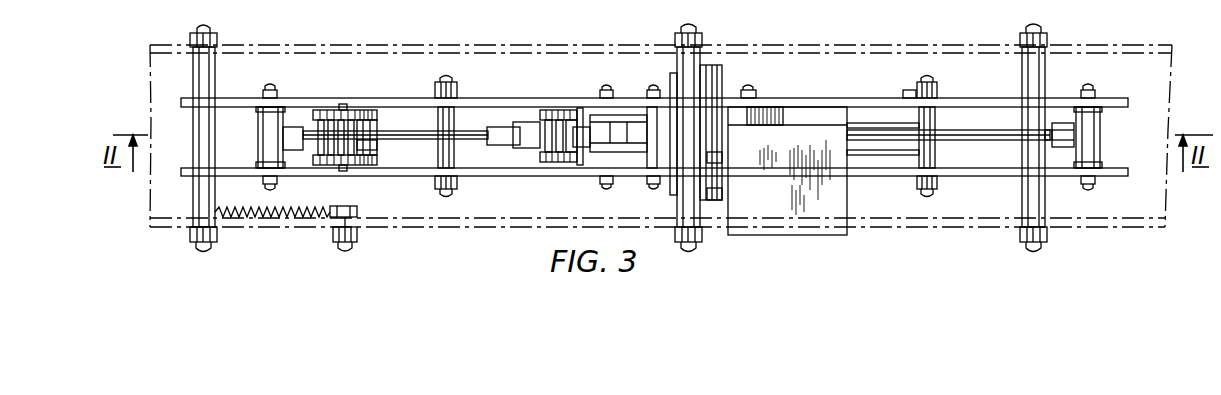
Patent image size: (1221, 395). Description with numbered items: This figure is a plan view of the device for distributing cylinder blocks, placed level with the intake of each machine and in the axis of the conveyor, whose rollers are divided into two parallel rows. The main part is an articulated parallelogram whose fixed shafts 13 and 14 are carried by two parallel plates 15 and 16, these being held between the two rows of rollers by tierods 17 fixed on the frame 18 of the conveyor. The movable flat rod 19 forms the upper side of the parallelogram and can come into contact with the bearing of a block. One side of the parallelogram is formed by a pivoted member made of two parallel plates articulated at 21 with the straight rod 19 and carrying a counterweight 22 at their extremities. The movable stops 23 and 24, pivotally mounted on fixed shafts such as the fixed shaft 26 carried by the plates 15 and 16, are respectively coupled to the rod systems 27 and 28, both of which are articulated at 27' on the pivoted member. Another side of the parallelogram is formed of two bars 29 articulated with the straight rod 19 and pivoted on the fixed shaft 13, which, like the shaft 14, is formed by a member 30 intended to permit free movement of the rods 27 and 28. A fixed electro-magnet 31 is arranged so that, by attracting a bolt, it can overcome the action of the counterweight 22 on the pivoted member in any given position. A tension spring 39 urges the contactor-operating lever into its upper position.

The fixed shaft 13 is at (364, 100).
The fixed shaft 14 is at (607, 96).
The parallel plate 15 is at (520, 98).
The parallel plate 16 is at (515, 172).
The tierod 17 is at (195, 78).
The frame 18 is at (545, 50).
The movable flat rod 19 is at (408, 137).
The pivot 21 is at (569, 110).
The counterweight 22 is at (716, 191).
The movable stop 23 is at (259, 123).
The movable stop 24 is at (1092, 144).
The fixed shaft 26 is at (1085, 96).
The rod system 27 is at (508, 109).
The articulation point 27' is at (561, 116).
The rod system 28 is at (787, 140).
The bar 29 is at (342, 112).
The member 30 is at (375, 150).
The fixed electro-magnet 31 is at (828, 118).
The tension spring 39 is at (305, 218).